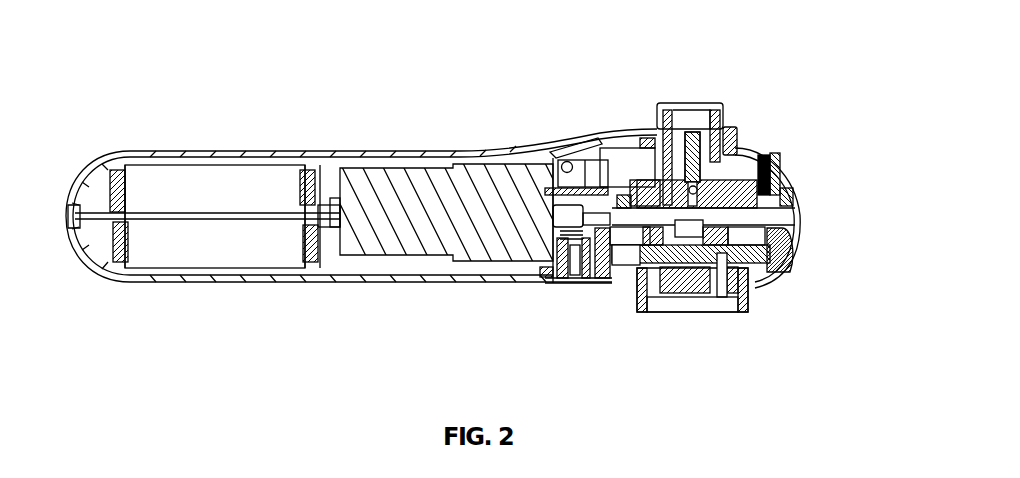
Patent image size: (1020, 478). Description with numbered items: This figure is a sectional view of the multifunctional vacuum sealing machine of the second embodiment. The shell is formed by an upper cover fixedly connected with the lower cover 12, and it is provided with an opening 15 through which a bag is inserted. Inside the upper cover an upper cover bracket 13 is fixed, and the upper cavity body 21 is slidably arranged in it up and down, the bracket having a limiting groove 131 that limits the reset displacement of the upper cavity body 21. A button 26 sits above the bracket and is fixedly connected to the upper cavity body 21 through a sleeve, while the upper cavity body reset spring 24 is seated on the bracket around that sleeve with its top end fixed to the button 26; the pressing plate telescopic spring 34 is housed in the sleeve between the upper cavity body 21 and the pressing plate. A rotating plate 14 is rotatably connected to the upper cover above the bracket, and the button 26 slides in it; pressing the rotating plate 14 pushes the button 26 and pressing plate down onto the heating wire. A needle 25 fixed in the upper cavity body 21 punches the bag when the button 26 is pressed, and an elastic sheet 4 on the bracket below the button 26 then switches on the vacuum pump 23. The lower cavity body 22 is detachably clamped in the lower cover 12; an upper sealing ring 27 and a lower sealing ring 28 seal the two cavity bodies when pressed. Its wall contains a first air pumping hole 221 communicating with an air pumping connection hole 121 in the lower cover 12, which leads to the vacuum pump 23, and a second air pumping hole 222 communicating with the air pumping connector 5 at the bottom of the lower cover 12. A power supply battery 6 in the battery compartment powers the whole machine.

The elastic sheet 4 is at (655, 182).
The air pumping connector 5 is at (730, 298).
The power supply battery 6 is at (222, 248).
The lower cover 12 is at (368, 283).
The upper cover bracket 13 is at (555, 180).
The rotating plate 14 is at (582, 137).
The opening 15 is at (696, 300).
The upper cavity body 21 is at (740, 168).
The lower cavity body 22 is at (760, 246).
The vacuum pump 23 is at (410, 200).
The upper cavity body reset spring 24 is at (645, 127).
The needle 25 is at (745, 137).
The button 26 is at (690, 108).
The upper sealing ring 27 is at (770, 192).
The lower sealing ring 28 is at (730, 228).
The pressing plate telescopic spring 34 is at (707, 110).
The air pumping connection hole 121 is at (590, 298).
The limiting groove 131 is at (775, 158).
The first air pumping hole 221 is at (650, 300).
The second air pumping hole 222 is at (770, 283).